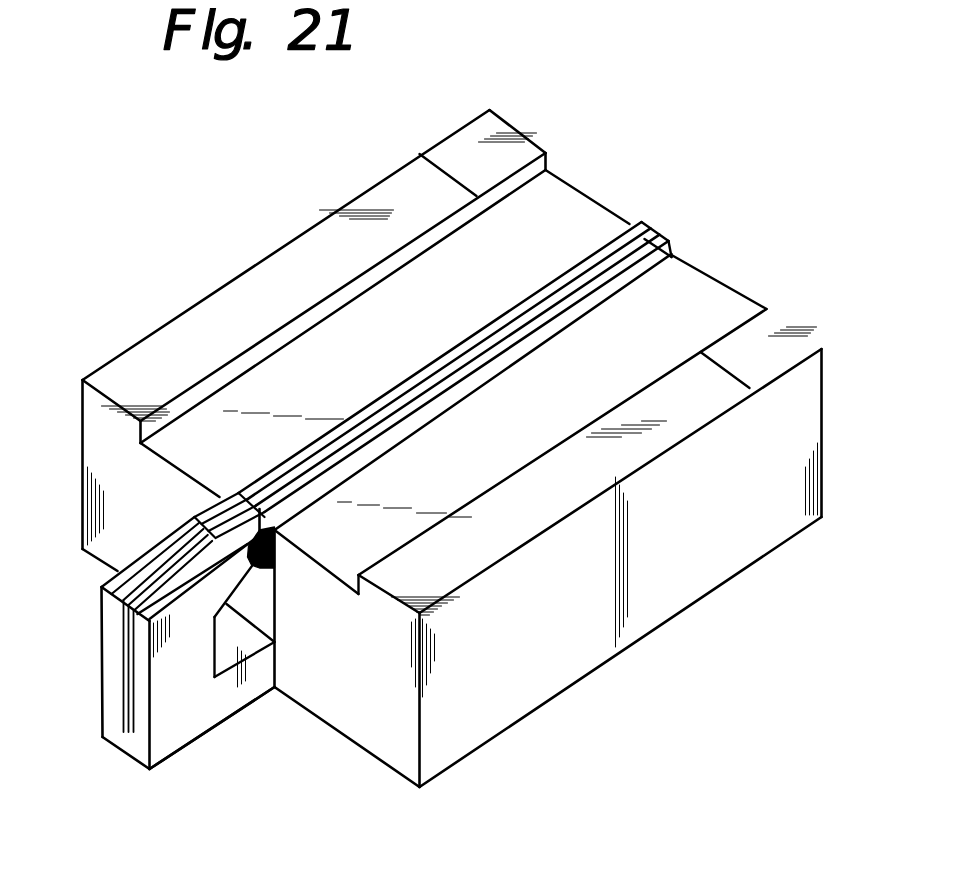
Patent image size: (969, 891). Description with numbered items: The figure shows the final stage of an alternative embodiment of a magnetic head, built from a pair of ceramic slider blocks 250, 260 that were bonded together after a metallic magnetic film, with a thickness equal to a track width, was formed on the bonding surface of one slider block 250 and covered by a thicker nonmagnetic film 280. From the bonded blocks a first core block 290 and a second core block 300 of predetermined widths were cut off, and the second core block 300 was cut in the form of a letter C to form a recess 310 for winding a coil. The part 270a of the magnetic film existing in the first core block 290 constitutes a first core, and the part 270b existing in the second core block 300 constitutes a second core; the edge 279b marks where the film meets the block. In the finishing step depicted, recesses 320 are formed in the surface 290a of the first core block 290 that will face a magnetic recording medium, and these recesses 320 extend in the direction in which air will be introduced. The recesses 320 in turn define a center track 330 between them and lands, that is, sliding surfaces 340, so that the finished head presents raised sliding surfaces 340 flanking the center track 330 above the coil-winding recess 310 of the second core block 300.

The slider block 250 is at (512, 711).
The slider block 260 is at (97, 485).
The part of magnetic film 270a is at (295, 462).
The part of magnetic film 270b is at (103, 713).
The edge of block 279b is at (225, 498).
The nonmagnetic film 280 is at (132, 733).
The first core block 290 is at (548, 478).
The surface of first core block 290a is at (304, 266).
The second core block 300 is at (213, 733).
The recess 310 is at (237, 643).
The recesses 320 is at (562, 208).
The center track 330 is at (598, 308).
The sliding surfaces 340 is at (498, 152).